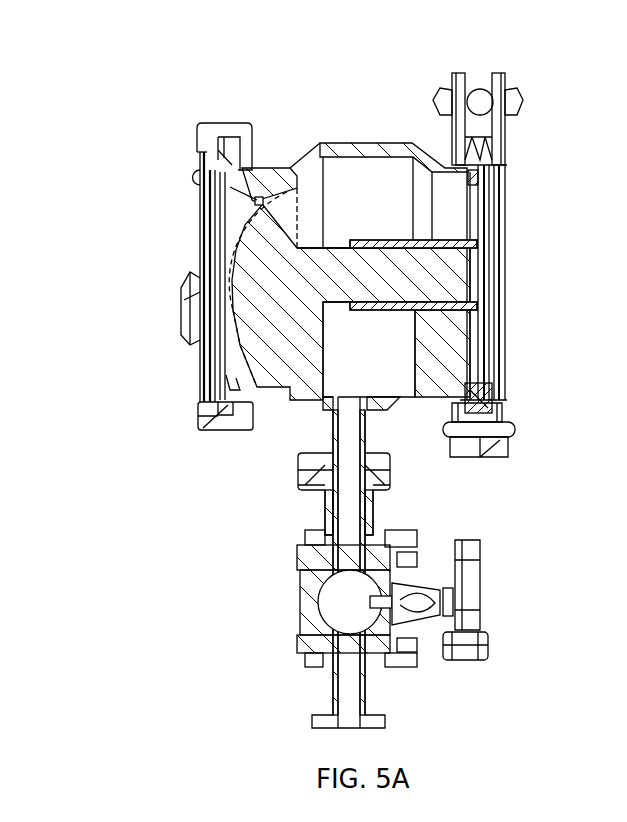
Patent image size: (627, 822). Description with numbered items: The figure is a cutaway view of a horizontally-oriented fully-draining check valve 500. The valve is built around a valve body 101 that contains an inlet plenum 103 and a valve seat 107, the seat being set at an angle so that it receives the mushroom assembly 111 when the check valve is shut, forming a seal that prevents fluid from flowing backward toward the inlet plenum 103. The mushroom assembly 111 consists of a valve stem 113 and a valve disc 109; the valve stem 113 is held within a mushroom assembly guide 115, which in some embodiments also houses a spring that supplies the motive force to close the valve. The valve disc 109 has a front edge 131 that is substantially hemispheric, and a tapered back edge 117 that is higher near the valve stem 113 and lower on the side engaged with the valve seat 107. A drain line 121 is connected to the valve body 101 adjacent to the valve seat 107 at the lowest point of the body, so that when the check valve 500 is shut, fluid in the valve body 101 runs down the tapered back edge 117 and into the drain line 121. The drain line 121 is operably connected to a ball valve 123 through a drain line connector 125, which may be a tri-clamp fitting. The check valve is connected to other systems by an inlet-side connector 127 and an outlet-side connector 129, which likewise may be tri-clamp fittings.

The horizontally-oriented fully-draining check valve 500 is at (104, 107).
The valve body 101 is at (350, 142).
The inlet plenum 103 is at (233, 205).
The valve seat 107 is at (277, 190).
The valve disc 109 is at (258, 255).
The mushroom assembly 111 is at (307, 246).
The valve stem 113 is at (333, 310).
The mushroom assembly guide 115 is at (447, 304).
The tapered back edge 117 is at (297, 334).
The drain line 121 is at (323, 432).
The ball valve 123 is at (295, 603).
The drain line connector 125 is at (295, 489).
The inlet-side connector 127 is at (196, 433).
The outlet-side connector 129 is at (480, 71).
The front edge 131 is at (242, 329).